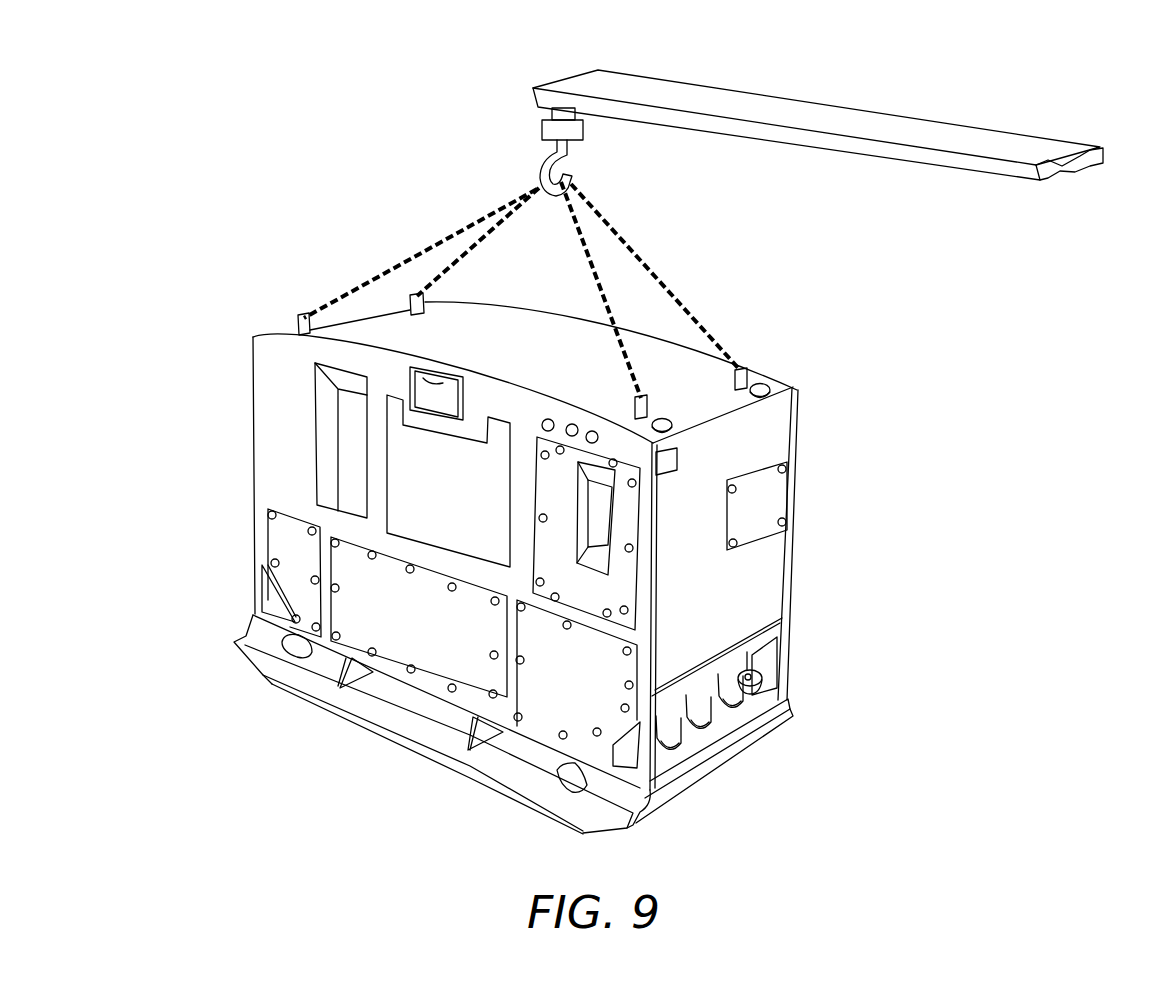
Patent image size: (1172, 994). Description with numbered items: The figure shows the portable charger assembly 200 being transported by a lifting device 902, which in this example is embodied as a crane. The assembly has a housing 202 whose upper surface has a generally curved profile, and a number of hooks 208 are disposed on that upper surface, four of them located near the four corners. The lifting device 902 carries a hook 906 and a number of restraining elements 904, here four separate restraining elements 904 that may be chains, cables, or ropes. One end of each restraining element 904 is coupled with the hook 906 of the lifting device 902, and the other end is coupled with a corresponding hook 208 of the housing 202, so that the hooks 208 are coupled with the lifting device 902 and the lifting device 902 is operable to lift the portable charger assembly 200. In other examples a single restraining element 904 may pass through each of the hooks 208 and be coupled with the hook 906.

The portable charger assembly 200 is at (490, 556).
The housing 202 is at (231, 430).
The hooks 208 is at (413, 295).
The lifting device 902 is at (1003, 102).
The restraining elements 904 is at (495, 225).
The hook 906 is at (541, 164).